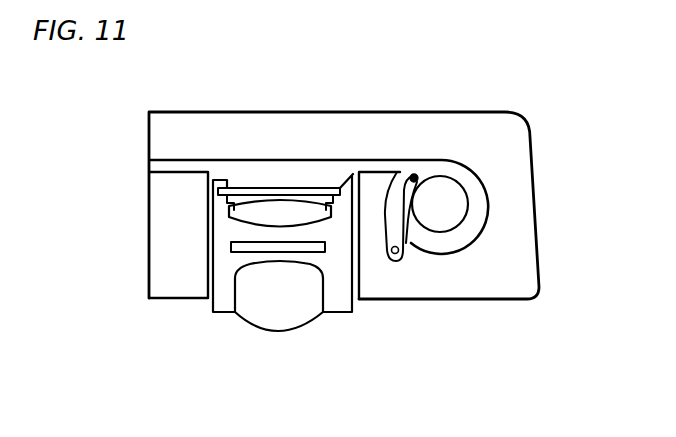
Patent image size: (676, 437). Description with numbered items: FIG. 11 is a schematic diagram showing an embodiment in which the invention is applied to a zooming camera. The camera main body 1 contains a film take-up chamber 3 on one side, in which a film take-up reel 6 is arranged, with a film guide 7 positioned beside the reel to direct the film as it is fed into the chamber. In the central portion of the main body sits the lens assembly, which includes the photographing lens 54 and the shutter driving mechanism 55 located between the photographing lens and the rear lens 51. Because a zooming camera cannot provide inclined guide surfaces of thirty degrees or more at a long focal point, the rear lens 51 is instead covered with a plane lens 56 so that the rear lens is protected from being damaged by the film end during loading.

The camera main body 1 is at (362, 133).
The film take-up chamber 3 is at (483, 189).
The film take-up reel 6 is at (455, 208).
The film guide 7 is at (409, 243).
The rear lens 51 is at (258, 212).
The photographing lens 54 is at (268, 308).
The shutter driving mechanism 55 is at (237, 248).
The plane lens 56 is at (287, 192).